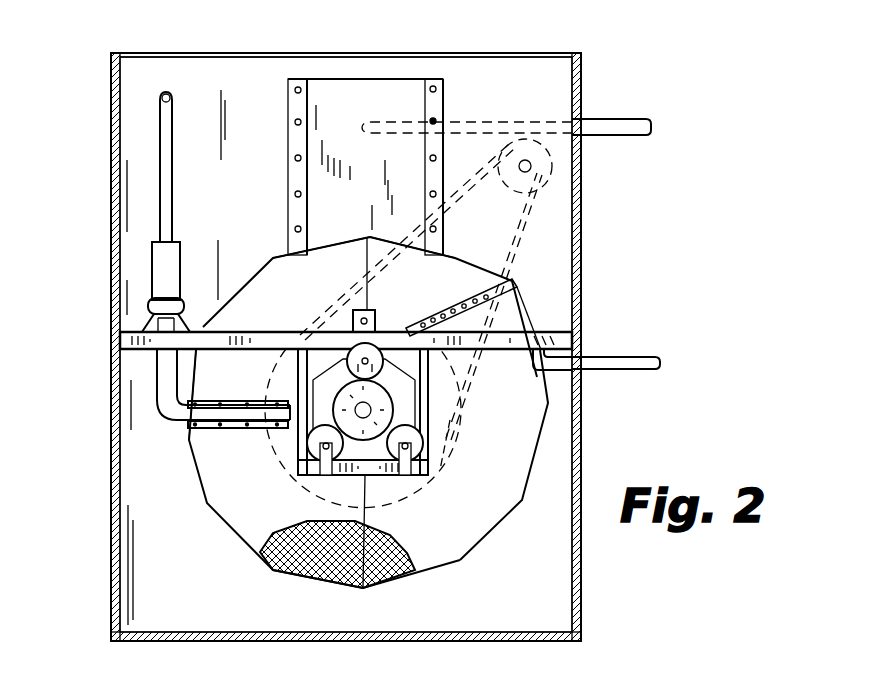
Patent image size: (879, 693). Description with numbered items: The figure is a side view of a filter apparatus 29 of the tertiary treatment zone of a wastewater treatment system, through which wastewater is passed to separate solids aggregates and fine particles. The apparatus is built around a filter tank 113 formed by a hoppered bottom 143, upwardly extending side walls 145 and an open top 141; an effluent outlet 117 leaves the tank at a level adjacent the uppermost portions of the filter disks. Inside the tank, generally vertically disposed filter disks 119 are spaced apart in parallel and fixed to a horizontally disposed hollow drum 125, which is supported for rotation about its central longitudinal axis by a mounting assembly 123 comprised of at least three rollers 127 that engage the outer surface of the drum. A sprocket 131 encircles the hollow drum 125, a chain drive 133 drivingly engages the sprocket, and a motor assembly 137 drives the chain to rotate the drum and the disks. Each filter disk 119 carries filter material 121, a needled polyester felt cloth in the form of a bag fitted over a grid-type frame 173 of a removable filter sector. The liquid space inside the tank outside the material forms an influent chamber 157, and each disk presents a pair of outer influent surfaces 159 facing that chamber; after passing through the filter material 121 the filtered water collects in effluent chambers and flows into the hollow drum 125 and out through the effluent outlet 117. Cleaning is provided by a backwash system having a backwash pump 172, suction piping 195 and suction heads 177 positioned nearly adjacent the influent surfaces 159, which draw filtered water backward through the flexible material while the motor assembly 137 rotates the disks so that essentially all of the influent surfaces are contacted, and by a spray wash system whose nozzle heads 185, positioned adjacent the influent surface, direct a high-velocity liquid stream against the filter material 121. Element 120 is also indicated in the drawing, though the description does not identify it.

The filter apparatus 29 is at (723, 160).
The filter tank 113 is at (303, 355).
The effluent outlet 117 is at (652, 121).
The filter disks 119 is at (344, 428).
The drum side wall 120 is at (537, 480).
The filter material 121 is at (395, 577).
The mounting assembly 123 is at (438, 484).
The hollow drum 125 is at (374, 404).
The rollers 127 is at (366, 344).
The sprocket 131 is at (548, 378).
The chain drive 133 is at (540, 228).
The motor assembly 137 is at (531, 166).
The open top 141 is at (116, 56).
The hoppered bottom 143 is at (150, 640).
The side walls 145 is at (136, 449).
The influent chamber 157 is at (190, 490).
The influent surfaces 159 is at (330, 297).
The backwash pump 172 is at (172, 258).
The grid-type frame 173 is at (312, 618).
The suction heads 177 is at (270, 404).
The nozzle heads 185 is at (520, 305).
The suction piping 195 is at (162, 388).